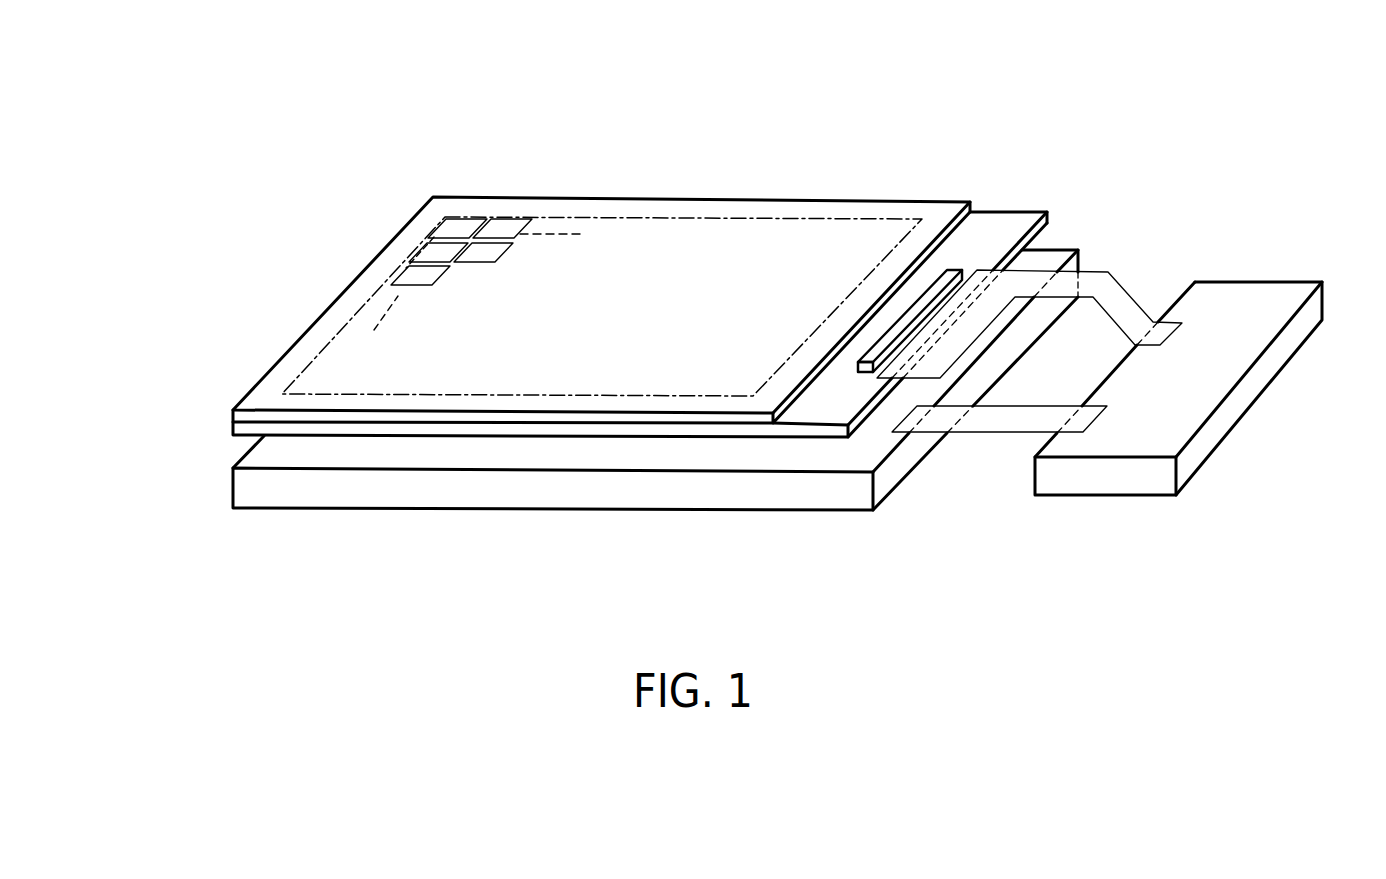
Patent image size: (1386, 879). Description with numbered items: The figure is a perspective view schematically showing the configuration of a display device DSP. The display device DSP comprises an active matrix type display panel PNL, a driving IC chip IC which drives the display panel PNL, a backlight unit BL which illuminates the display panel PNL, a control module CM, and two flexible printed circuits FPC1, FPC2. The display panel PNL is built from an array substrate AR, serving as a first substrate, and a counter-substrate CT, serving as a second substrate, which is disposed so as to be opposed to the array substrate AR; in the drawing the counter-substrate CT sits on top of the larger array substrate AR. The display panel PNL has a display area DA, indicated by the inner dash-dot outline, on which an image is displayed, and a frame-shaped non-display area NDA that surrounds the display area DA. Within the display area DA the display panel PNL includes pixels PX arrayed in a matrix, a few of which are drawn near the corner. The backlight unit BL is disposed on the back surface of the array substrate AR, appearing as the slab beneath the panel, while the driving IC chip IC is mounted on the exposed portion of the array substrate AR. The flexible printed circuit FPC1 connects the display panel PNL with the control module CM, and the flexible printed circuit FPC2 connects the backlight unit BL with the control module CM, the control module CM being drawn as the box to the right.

The display device DSP is at (1146, 121).
The display panel PNL is at (226, 419).
The counter-substrate CT is at (931, 199).
The array substrate AR is at (1041, 212).
The non-display area NDA is at (697, 206).
The display area DA is at (586, 217).
The pixels PX is at (458, 228).
The driving IC chip IC is at (948, 269).
The backlight unit BL is at (770, 493).
The flexible printed circuit FPC1 is at (1120, 302).
The flexible printed circuit FPC2 is at (992, 421).
The control module CM is at (1108, 483).